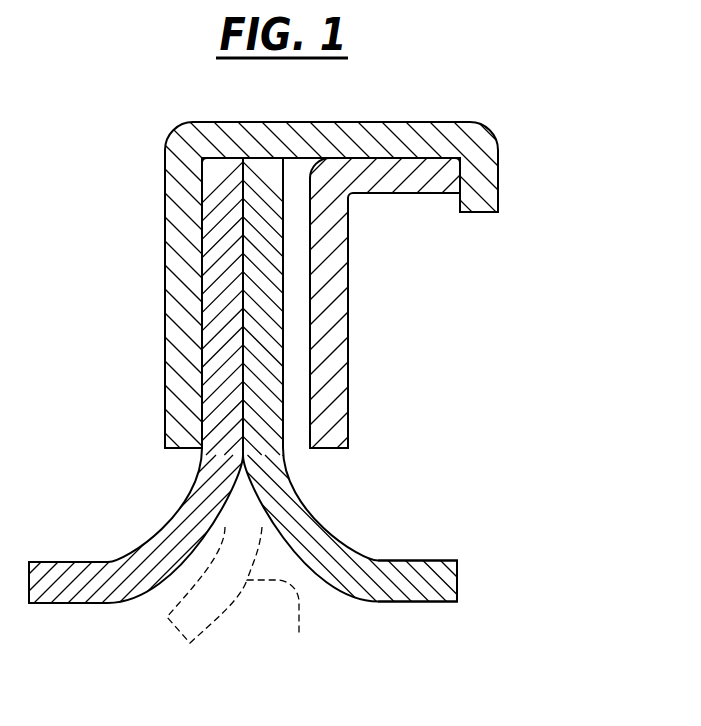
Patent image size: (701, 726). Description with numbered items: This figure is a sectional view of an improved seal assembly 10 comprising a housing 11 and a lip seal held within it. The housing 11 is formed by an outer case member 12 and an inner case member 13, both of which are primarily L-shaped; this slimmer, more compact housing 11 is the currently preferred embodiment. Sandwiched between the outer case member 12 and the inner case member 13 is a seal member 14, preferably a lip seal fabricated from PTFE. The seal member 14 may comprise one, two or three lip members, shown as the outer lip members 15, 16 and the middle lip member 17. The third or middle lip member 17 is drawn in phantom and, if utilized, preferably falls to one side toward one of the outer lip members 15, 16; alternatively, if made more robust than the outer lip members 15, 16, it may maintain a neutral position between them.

The seal assembly 10 is at (550, 222).
The housing 11 is at (405, 115).
The outer case member 12 is at (222, 133).
The inner case member 13 is at (328, 310).
The seal member 14 is at (190, 307).
The lip member 15 is at (68, 603).
The lip member 16 is at (406, 602).
The middle lip member 17 is at (240, 597).